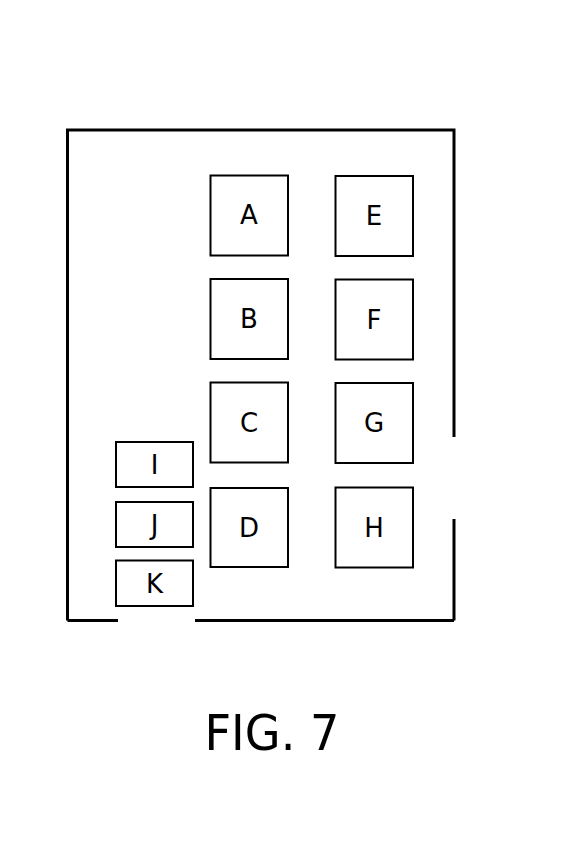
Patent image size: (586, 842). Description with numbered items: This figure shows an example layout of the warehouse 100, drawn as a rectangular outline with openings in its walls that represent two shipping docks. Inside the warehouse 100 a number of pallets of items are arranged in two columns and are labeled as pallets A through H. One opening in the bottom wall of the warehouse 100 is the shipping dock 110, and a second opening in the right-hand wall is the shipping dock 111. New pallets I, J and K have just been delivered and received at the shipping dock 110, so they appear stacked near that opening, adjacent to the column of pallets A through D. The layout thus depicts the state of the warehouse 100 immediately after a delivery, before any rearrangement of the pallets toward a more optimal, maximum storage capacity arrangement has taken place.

The warehouse 100 is at (260, 147).
The shipping dock 110 is at (146, 631).
The shipping dock 111 is at (478, 489).